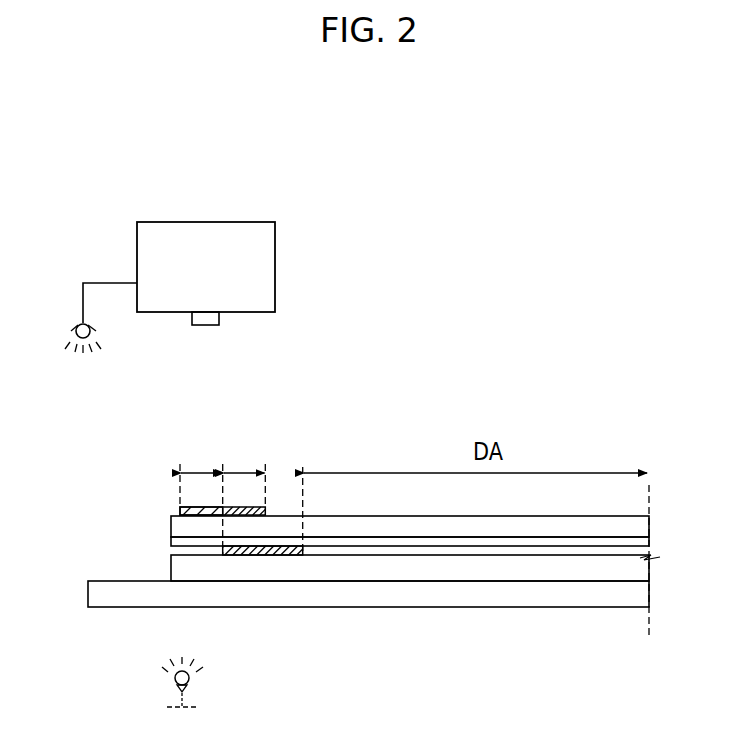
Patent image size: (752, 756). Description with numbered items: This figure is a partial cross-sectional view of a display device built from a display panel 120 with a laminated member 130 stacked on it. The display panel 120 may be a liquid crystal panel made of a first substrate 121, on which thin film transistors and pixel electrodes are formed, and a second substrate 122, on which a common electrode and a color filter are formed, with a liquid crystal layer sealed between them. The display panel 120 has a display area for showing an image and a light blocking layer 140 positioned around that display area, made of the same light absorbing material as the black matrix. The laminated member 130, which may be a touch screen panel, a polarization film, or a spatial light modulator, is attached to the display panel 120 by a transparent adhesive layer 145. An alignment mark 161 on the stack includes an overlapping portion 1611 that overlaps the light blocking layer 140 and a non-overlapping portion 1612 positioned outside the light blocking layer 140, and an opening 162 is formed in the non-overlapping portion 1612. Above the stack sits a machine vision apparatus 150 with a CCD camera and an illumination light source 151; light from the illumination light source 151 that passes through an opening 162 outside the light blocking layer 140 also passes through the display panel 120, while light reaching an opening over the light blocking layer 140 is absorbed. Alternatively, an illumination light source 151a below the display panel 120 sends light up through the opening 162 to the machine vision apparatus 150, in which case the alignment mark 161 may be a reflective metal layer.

The machine vision apparatus 150 is at (275, 266).
The illumination light source 151 is at (77, 324).
The illumination light source 151a is at (176, 685).
The laminated member 130 is at (643, 524).
The transparent adhesive layer 145 is at (647, 541).
The light blocking layer 140 is at (260, 555).
The second substrate 122 is at (473, 570).
The first substrate 121 is at (542, 597).
The display panel 120 is at (573, 660).
The alignment mark 161 is at (269, 505).
The overlapping portion 1611 is at (249, 470).
The non-overlapping portion 1612 is at (202, 470).
The opening 162 is at (202, 510).